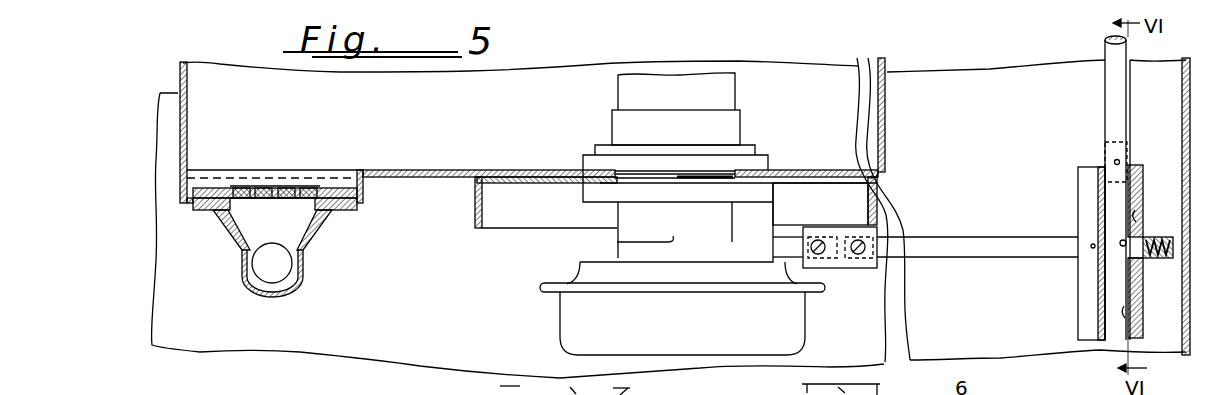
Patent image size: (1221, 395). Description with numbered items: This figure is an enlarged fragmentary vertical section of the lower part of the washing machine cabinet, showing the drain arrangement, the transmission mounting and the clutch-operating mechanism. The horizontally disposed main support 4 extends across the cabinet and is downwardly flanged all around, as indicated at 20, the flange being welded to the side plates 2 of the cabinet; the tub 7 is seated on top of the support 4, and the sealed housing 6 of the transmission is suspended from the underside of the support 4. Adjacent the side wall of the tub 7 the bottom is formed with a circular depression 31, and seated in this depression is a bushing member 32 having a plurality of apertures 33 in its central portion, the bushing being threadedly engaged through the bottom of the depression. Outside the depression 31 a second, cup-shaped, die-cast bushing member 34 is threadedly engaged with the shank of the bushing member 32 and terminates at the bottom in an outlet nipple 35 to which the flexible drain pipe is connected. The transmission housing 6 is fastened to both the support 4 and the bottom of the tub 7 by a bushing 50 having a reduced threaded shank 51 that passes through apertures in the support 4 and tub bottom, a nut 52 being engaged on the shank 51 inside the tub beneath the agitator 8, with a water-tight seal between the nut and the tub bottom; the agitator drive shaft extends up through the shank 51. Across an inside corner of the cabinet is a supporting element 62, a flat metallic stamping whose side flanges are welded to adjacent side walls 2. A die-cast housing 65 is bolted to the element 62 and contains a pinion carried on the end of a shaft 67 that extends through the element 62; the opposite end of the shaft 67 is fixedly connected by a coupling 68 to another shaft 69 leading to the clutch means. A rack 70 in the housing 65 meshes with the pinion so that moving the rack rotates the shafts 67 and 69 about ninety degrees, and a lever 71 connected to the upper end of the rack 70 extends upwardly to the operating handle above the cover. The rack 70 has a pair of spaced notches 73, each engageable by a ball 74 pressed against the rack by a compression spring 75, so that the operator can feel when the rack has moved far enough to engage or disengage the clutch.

The side plate 2 is at (670, 218).
The main support 4 is at (552, 180).
The sealed housing 6 is at (682, 319).
The tub 7 is at (907, 115).
The agitator 8 is at (723, 93).
The downward flange 20 is at (497, 210).
The circular depression 31 is at (335, 182).
The bushing member 32 is at (212, 197).
The apertures 33 is at (256, 190).
The bushing member 34 is at (313, 227).
The outlet nipple 35 is at (290, 287).
The bushing 50 is at (643, 216).
The reduced threaded shank 51 is at (710, 175).
The nut 52 is at (592, 163).
The supporting element 62 is at (1100, 288).
The die-cast housing 65 is at (1137, 205).
The shaft 67 is at (957, 250).
The coupling 68 is at (850, 262).
The shaft 69 is at (785, 240).
The rack 70 is at (1129, 287).
The lever 71 is at (1117, 105).
The notches 73 is at (1145, 220).
The ball 74 is at (1143, 237).
The compression spring 75 is at (1137, 260).